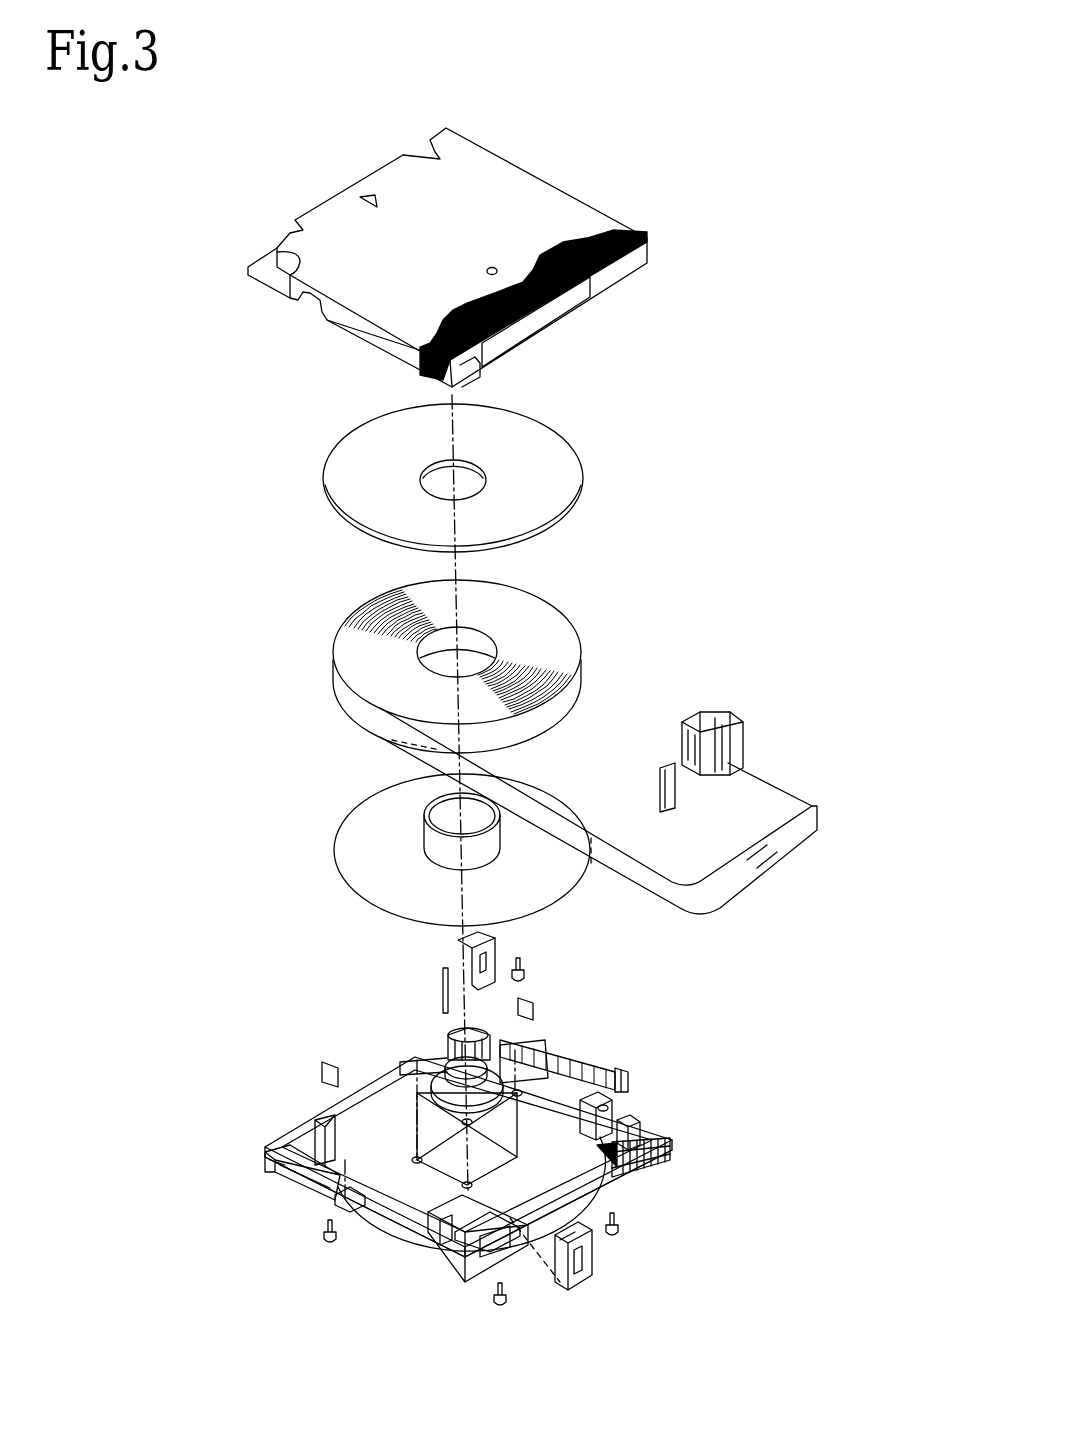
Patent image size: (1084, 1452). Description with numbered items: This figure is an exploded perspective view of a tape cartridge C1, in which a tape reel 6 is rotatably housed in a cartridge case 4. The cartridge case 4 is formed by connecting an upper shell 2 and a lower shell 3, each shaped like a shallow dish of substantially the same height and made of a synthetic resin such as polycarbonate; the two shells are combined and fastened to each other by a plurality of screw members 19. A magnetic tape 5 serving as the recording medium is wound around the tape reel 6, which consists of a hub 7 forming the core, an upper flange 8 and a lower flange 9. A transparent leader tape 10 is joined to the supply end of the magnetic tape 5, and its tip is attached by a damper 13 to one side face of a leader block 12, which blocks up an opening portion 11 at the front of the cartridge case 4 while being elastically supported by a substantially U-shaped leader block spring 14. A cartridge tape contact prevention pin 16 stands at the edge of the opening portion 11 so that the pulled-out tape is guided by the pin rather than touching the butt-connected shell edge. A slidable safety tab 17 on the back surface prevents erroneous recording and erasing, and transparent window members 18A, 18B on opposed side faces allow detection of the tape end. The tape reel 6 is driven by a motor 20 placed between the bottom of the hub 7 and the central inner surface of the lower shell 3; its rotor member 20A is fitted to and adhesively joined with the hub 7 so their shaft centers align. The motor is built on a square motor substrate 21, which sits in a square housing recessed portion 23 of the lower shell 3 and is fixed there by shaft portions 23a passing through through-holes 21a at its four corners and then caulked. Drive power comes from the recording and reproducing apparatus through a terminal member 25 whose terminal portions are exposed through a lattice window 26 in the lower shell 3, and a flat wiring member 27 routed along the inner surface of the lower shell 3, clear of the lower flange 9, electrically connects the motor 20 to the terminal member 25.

The tape cartridge C1 is at (698, 266).
The upper shell 2 is at (258, 271).
The lower shell 3 is at (268, 1148).
The cartridge case 4 is at (136, 585).
The magnetic tape 5 is at (562, 590).
The tape reel 6 is at (270, 625).
The hub 7 is at (420, 836).
The upper flange 8 is at (333, 518).
The lower flange 9 is at (345, 838).
The leader tape 10 is at (770, 763).
The opening portion 11 is at (445, 1080).
The leader block 12 is at (725, 715).
The damper 13 is at (660, 790).
The leader block spring 14 is at (498, 947).
The cartridge tape contact prevention pin 16 is at (440, 975).
The safety tab 17 is at (598, 1250).
The transparent window member 18A is at (318, 1072).
The transparent window member 18B is at (540, 1008).
The screw members 19 is at (492, 1298).
The motor 20 is at (418, 1068).
The rotor member 20A is at (548, 1045).
The motor substrate 21 is at (420, 1208).
The through-holes 21a is at (285, 1172).
The housing recessed portion 23 is at (522, 1248).
The shaft portions 23a is at (340, 1202).
The terminal member 25 is at (668, 1155).
The lattice window 26 is at (645, 1178).
The wiring member 27 is at (628, 1075).